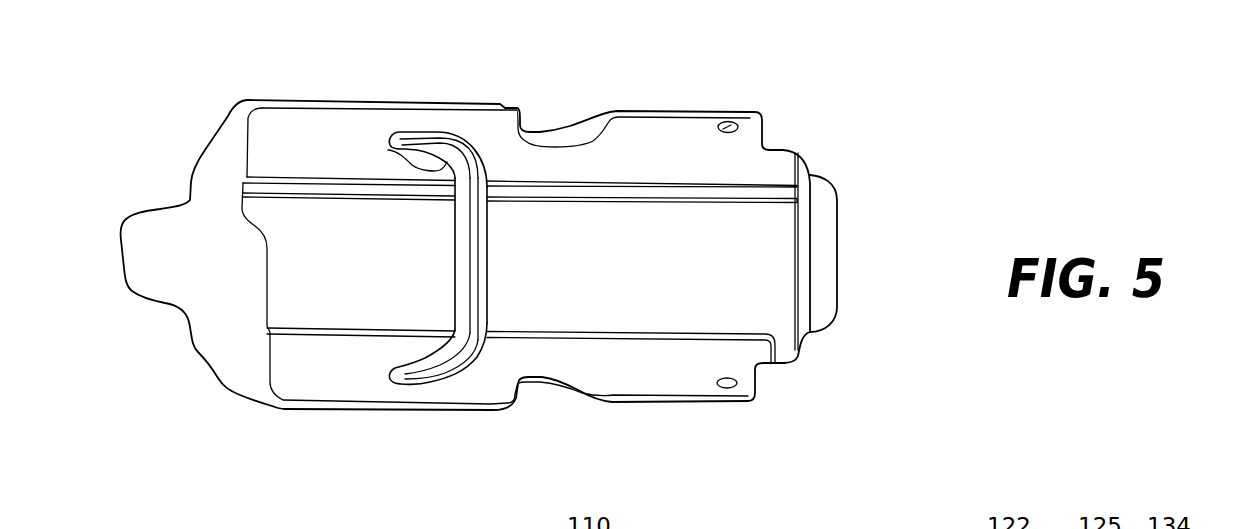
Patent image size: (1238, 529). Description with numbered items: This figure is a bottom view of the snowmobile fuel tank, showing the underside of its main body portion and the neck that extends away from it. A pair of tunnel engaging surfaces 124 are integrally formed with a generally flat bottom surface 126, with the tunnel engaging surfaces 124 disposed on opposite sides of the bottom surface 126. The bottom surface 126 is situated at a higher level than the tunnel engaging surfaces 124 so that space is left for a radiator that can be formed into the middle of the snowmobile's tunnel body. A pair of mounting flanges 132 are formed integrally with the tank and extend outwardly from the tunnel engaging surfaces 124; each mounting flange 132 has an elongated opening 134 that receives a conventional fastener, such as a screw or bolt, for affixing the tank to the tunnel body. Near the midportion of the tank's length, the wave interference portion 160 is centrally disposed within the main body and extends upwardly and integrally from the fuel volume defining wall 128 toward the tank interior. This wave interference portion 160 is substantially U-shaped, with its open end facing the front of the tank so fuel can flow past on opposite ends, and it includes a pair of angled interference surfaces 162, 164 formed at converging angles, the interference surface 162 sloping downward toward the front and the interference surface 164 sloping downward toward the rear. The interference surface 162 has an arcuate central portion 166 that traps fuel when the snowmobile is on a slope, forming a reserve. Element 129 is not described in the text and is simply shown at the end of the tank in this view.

The tunnel engaging surface 124 is at (682, 139).
The bottom surface 126 is at (747, 268).
The fuel volume defining wall 128 is at (790, 229).
The end cap 129 is at (837, 307).
The mounting flange 132 is at (750, 130).
The elongated opening 134 is at (741, 131).
The wave interference portion 160 is at (453, 258).
The angled interference surface 162 is at (388, 150).
The angled interference surface 164 is at (530, 253).
The arcuate central portion 166 is at (456, 253).